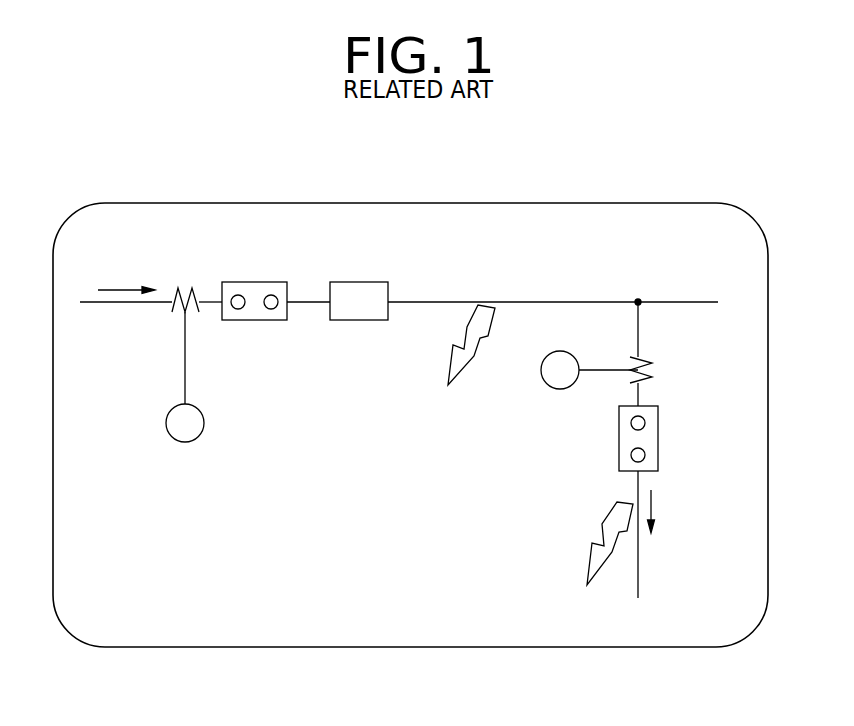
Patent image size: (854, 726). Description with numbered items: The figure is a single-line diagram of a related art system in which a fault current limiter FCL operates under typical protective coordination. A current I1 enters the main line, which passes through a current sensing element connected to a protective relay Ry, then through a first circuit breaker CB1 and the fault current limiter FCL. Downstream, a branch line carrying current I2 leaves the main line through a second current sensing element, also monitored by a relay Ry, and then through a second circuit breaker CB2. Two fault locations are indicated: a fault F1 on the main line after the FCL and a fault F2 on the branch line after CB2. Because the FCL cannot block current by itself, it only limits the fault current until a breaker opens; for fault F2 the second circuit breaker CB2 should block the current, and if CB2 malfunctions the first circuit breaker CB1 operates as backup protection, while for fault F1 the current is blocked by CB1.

The input current I1 is at (126, 279).
The protective relay Ry is at (409, 365).
The first circuit breaker CB1 is at (254, 288).
The fault current limiter FCL is at (359, 301).
The fault F1 is at (468, 360).
The second circuit breaker CB2 is at (620, 438).
The branch current I2 is at (661, 511).
The fault F2 is at (604, 555).